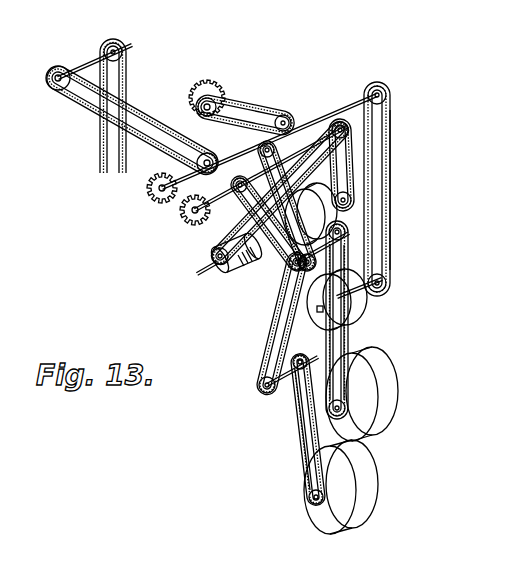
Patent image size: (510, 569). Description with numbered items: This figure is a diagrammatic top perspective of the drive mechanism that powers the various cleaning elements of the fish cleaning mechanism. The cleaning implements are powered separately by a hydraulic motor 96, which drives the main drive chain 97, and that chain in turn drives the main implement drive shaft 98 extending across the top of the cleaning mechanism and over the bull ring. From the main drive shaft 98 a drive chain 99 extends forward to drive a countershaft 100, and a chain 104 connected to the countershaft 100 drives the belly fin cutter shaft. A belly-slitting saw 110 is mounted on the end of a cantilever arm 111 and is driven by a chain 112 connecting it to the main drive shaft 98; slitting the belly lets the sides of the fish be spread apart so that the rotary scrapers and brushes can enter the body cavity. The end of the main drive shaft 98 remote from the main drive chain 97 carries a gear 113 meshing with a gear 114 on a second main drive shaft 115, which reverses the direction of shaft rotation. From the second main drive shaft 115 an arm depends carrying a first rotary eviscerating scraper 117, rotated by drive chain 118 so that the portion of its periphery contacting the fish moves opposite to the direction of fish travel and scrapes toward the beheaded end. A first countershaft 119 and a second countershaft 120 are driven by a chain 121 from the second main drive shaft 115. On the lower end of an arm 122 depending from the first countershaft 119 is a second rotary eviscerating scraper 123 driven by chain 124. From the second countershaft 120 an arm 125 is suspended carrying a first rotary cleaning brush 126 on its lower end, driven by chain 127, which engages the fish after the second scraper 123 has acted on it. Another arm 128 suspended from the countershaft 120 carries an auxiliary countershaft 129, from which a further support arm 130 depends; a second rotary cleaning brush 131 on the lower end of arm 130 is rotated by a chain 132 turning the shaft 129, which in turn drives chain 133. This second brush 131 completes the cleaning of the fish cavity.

The hydraulic motor 96 is at (233, 283).
The main drive chain 97 is at (205, 243).
The main implement drive shaft 98 is at (300, 110).
The drive chain 99 is at (77, 107).
The countershaft 100 is at (97, 60).
The chain 104 is at (127, 67).
The belly-slitting saw 110 is at (207, 80).
The cantilever arm 111 is at (250, 108).
The chain 112 is at (270, 100).
The gear 113 is at (158, 205).
The gear 114 is at (190, 228).
The second main drive shaft 115 is at (331, 148).
The first rotary eviscerating scraper 117 is at (322, 217).
The drive chain 118 is at (350, 140).
The first countershaft 119 is at (365, 95).
The second countershaft 120 is at (325, 300).
The chain 121 is at (265, 275).
The arm 122 is at (378, 258).
The second rotary eviscerating scraper 123 is at (368, 307).
The chain 124 is at (392, 250).
The arm 125 is at (340, 350).
The first rotary cleaning brush 126 is at (400, 397).
The chain 127 is at (340, 345).
The arm 128 is at (270, 342).
The auxiliary countershaft 129 is at (288, 395).
The support arm 130 is at (307, 452).
The second rotary cleaning brush 131 is at (380, 482).
The chain 132 is at (263, 397).
The chain 133 is at (300, 473).